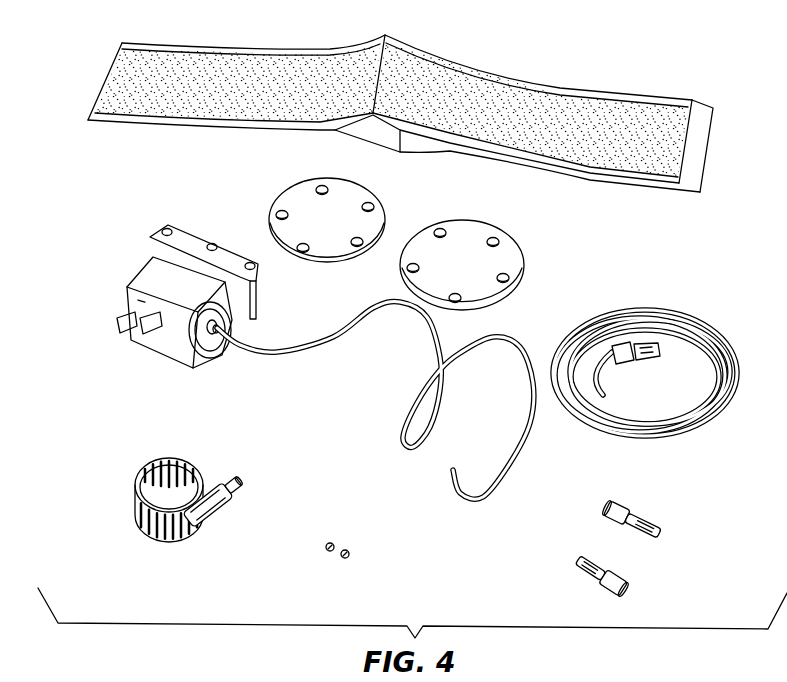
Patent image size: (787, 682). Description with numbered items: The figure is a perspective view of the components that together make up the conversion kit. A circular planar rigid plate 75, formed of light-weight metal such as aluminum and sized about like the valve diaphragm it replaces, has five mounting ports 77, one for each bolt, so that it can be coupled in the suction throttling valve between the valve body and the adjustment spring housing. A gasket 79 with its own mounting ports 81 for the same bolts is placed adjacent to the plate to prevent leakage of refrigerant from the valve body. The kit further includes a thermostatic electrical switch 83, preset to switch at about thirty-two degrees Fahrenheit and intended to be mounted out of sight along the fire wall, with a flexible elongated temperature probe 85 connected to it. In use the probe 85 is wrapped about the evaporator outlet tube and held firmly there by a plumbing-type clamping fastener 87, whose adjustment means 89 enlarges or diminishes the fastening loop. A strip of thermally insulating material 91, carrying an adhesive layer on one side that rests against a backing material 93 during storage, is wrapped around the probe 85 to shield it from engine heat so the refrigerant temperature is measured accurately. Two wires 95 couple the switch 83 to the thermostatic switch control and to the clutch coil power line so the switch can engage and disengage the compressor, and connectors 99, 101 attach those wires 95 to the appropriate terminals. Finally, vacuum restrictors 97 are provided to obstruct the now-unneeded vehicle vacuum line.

The planar rigid plate 75 is at (288, 198).
The mounting ports 77 is at (322, 187).
The gasket 79 is at (477, 228).
The mounting ports 81 is at (413, 268).
The thermostatic electrical switch 83 is at (152, 265).
The flexible elongated temperature probe 85 is at (333, 345).
The fastener 87 is at (150, 461).
The adjustment means 89 is at (222, 530).
The thermally insulating material 91 is at (596, 90).
The backing material 93 is at (699, 155).
The wires 95 is at (733, 360).
The vacuum restrictors 97 is at (348, 558).
The connector 99 is at (667, 520).
The connector 101 is at (632, 588).